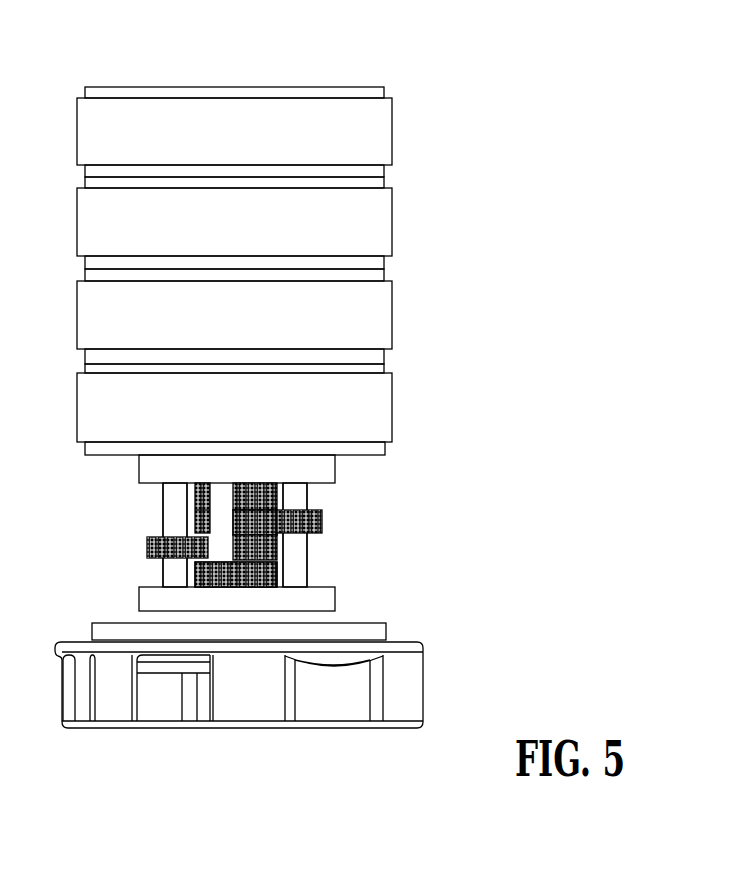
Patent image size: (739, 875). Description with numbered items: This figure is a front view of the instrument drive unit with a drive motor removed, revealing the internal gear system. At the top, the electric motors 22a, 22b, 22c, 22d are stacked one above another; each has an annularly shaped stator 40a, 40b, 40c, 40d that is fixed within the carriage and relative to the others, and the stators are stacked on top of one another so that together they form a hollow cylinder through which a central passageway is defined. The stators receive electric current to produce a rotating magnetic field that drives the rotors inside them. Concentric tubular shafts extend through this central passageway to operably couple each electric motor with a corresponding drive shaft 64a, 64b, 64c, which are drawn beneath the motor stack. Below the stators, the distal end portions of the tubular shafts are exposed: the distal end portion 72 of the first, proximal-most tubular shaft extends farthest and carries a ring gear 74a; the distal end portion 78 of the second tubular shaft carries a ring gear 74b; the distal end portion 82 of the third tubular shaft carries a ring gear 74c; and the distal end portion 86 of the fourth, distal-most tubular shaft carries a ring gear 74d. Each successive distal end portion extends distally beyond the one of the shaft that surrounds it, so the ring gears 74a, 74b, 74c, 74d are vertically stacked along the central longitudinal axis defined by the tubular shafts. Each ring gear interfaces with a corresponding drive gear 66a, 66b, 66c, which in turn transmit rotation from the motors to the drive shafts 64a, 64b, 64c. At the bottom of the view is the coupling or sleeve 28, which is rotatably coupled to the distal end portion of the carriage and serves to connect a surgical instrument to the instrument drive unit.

The electric motor 22a is at (396, 94).
The electric motor 22b is at (396, 188).
The electric motor 22c is at (396, 281).
The electric motor 22d is at (396, 374).
The stator 40a is at (335, 102).
The stator 40b is at (382, 221).
The stator 40c is at (382, 312).
The stator 40d is at (382, 411).
The coupling or sleeve 28 is at (425, 680).
The drive shaft 64a is at (217, 518).
The drive shaft 64b is at (172, 493).
The drive shaft 64c is at (302, 498).
The drive gear 66a is at (197, 578).
The drive gear 66b is at (148, 547).
The drive gear 66c is at (323, 520).
The distal end portion 72 is at (278, 568).
The ring gear 74a is at (272, 587).
The ring gear 74b is at (203, 587).
The ring gear 74c is at (233, 510).
The ring gear 74d is at (232, 502).
The distal end portion 78 is at (277, 540).
The distal end portion 82 is at (305, 528).
The distal end portion 86 is at (240, 484).